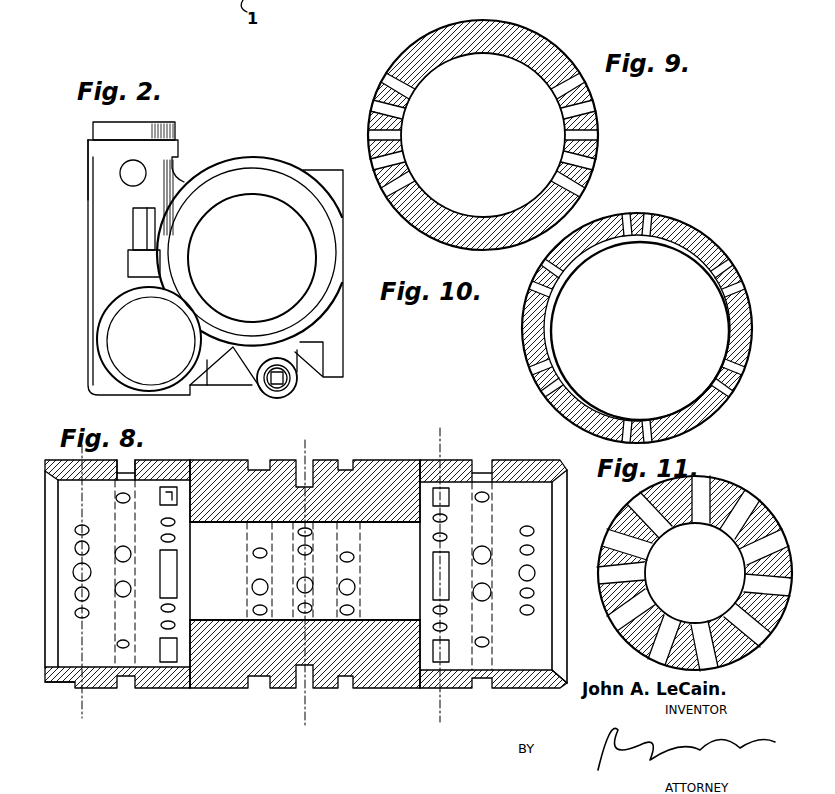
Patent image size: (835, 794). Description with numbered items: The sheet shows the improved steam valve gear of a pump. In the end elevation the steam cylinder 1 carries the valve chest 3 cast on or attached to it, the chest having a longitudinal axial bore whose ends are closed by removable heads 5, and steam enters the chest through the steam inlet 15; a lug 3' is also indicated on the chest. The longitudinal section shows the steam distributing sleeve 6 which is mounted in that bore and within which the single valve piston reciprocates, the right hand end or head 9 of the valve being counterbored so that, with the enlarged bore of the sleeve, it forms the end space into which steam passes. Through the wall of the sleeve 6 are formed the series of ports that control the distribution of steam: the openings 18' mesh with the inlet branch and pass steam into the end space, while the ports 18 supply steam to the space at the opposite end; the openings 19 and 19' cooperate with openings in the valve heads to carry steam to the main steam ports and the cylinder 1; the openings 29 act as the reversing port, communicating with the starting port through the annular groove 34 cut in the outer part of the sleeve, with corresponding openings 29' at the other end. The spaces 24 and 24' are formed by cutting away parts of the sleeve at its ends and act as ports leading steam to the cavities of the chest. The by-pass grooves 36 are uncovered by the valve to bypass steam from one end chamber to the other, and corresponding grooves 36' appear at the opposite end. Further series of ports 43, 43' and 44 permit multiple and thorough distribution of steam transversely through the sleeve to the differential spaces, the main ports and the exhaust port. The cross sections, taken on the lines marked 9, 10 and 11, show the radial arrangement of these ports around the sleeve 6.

In FIG. 2, the steam cylinder 1 is at (327, 258).
In FIG. 2, the valve chest 3 is at (177, 251).
In FIG. 2, the casing lug 3' is at (222, 386).
In FIG. 2, the removable heads 5 is at (172, 123).
In FIG. 2, the steam inlet 15 is at (140, 228).
In FIG. 9, the steam distributing sleeve 6 is at (523, 43).
In FIG. 10, the steam distributing sleeve 6 is at (720, 250).
In FIG. 11, the steam distributing sleeve 6 is at (773, 508).
In FIG. 8, the steam distributing sleeve 6 is at (213, 680).
In FIG. 8, the right hand end or head of the steam valve 9 is at (86, 708).
In FIG. 8, the section line 10- 10 is at (444, 712).
In FIG. 8, the section line 11- 11 is at (309, 718).
In FIG. 9, the ports 18 is at (510, 135).
In FIG. 8, the ports 18 is at (65, 668).
In FIG. 8, the openings 18' is at (564, 515).
In FIG. 8, the ports or openings 19 is at (161, 675).
In FIG. 10, the openings 19' is at (628, 328).
In FIG. 8, the openings 19' is at (468, 676).
In FIG. 8, the space 24 is at (54, 727).
In FIG. 8, the space 24' is at (539, 696).
In FIG. 8, the openings 29 is at (142, 697).
In FIG. 8, the ports or openings 29' is at (509, 464).
In FIG. 8, the annular groove 34 is at (128, 460).
In FIG. 8, the by-pass grooves 36 is at (204, 464).
In FIG. 10, the vane block 36' is at (640, 331).
In FIG. 8, the vane block 36' is at (460, 466).
In FIG. 8, the ports 43 is at (252, 667).
In FIG. 8, the ports 43' is at (368, 665).
In FIG. 11, the ports or openings 44 is at (743, 502).
In FIG. 8, the ports or openings 44 is at (307, 590).